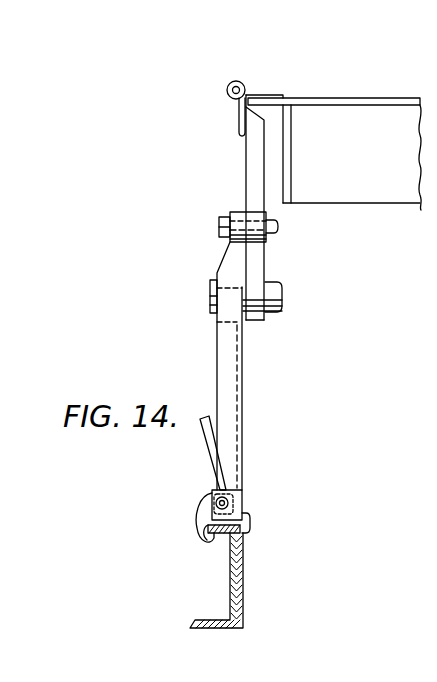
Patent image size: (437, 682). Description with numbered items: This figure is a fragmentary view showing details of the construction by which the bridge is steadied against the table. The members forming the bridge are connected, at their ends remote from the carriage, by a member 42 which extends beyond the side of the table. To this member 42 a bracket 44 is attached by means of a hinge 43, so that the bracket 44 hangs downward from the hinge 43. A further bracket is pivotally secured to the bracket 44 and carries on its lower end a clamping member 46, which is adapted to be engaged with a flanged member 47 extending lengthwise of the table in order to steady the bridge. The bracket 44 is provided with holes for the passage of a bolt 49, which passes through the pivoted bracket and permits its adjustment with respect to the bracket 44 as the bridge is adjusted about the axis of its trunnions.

The member 42 is at (333, 98).
The hinge 43 is at (237, 82).
The bracket 44 is at (245, 165).
The clamping member 46 is at (205, 507).
The flanged member 47 is at (230, 555).
The bolt 49 is at (222, 228).